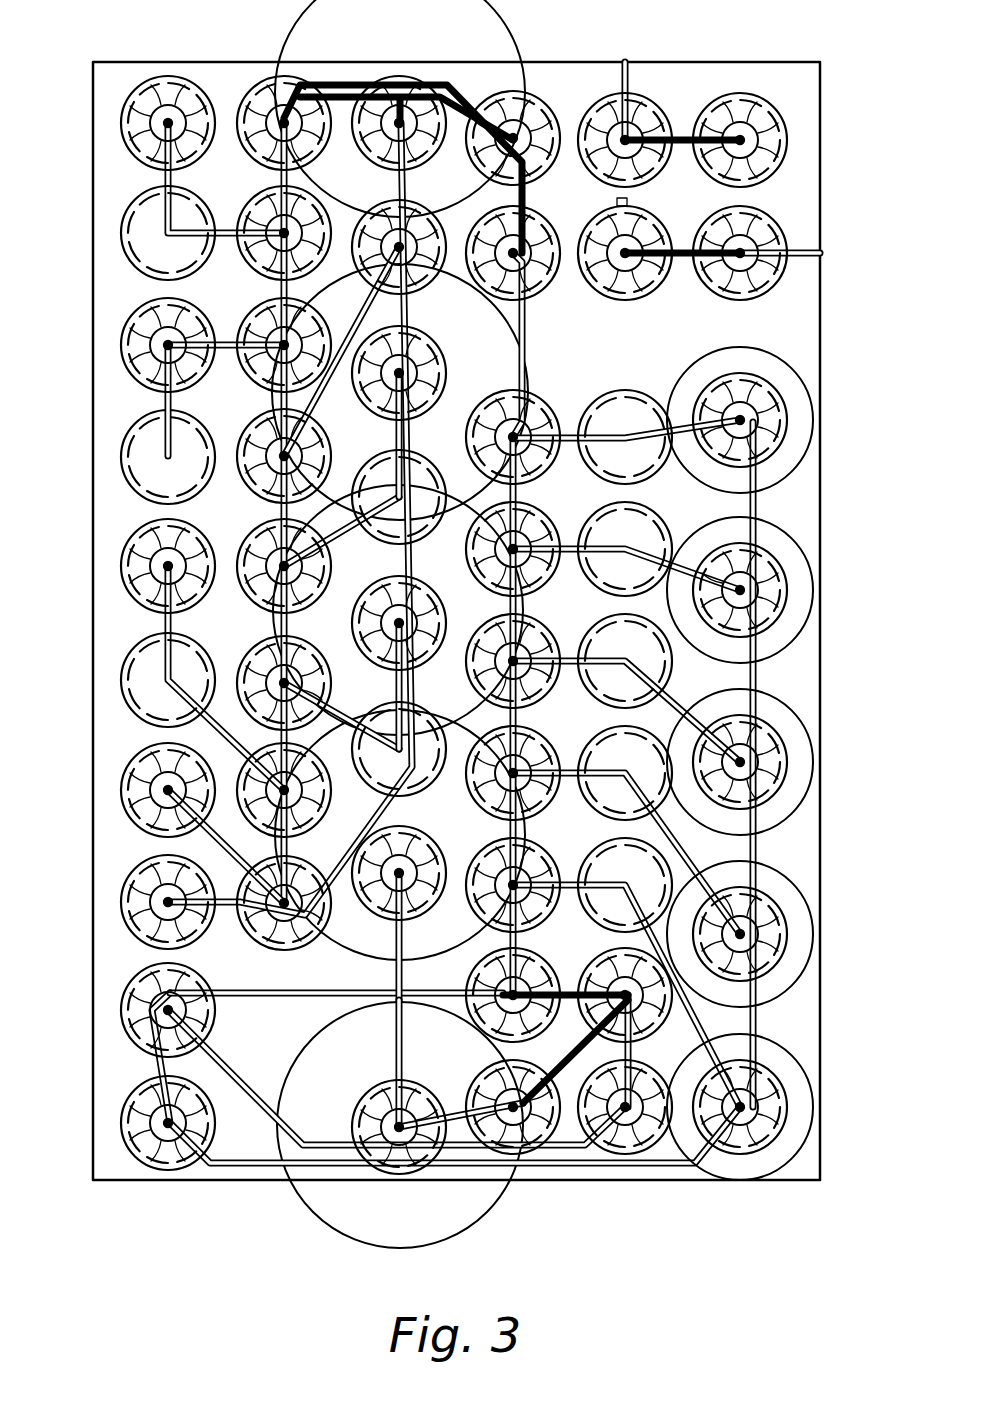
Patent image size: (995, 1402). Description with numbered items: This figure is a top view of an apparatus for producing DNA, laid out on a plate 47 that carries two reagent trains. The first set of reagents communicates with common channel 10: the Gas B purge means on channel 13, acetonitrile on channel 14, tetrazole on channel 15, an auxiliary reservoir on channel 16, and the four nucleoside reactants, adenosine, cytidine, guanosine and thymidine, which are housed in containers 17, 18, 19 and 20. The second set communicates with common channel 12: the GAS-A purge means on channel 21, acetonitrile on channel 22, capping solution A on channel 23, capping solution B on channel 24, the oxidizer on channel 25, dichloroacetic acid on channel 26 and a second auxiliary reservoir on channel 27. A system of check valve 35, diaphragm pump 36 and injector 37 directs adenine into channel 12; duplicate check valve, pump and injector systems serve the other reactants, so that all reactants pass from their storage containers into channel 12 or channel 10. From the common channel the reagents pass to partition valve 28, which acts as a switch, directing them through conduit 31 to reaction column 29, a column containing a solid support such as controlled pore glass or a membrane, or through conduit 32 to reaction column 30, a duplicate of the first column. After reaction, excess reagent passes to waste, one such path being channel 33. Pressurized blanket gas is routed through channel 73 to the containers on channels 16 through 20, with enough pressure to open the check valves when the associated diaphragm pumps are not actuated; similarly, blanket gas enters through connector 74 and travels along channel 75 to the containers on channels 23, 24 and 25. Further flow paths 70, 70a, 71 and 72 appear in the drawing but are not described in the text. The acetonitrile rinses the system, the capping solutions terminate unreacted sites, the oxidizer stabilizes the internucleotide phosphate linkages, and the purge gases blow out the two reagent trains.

The common channel 10 is at (283, 295).
The common channel 12 is at (524, 320).
The channel 13 is at (128, 1003).
The channel 14 is at (466, 1075).
The channel 15 is at (474, 827).
The auxiliary reservoir channel 16 is at (818, 1075).
The adenosine container 17 is at (815, 905).
The cytidine container 18 is at (814, 722).
The guanosine container 19 is at (805, 548).
The thymidine container 20 is at (805, 385).
The channel 21 is at (128, 785).
The channel 22 is at (128, 542).
The channel 23 is at (486, 615).
The channel 24 is at (488, 355).
The channel 25 is at (416, 40).
The channel 26 is at (201, 483).
The channel 27 is at (122, 104).
The partition valve 28 is at (258, 96).
The treatment reservoir 29 is at (788, 130).
The treatment column 30 is at (775, 250).
The channel 31 is at (478, 76).
The channel 32 is at (406, 147).
The channel 33 is at (627, 92).
The check valve 35 is at (785, 415).
The diaphragm pump 36 is at (642, 525).
The injector 37 is at (532, 578).
The plate 47 is at (648, 360).
The conductor 70 is at (268, 990).
The conductor 70a is at (322, 1027).
The conductor 71 is at (392, 1055).
The conductor 72 is at (392, 935).
The channel 73 is at (757, 502).
The connector 74 is at (128, 893).
The channel 75 is at (362, 836).